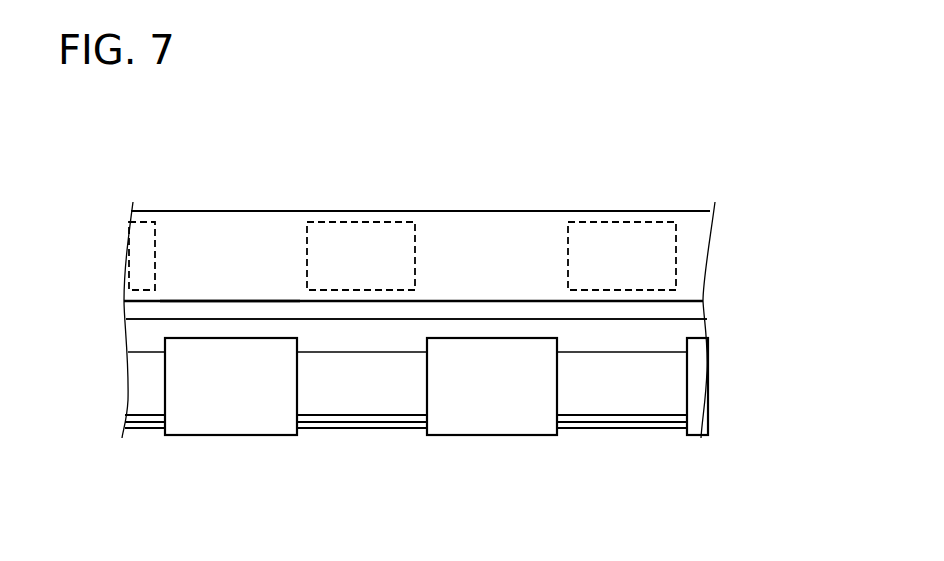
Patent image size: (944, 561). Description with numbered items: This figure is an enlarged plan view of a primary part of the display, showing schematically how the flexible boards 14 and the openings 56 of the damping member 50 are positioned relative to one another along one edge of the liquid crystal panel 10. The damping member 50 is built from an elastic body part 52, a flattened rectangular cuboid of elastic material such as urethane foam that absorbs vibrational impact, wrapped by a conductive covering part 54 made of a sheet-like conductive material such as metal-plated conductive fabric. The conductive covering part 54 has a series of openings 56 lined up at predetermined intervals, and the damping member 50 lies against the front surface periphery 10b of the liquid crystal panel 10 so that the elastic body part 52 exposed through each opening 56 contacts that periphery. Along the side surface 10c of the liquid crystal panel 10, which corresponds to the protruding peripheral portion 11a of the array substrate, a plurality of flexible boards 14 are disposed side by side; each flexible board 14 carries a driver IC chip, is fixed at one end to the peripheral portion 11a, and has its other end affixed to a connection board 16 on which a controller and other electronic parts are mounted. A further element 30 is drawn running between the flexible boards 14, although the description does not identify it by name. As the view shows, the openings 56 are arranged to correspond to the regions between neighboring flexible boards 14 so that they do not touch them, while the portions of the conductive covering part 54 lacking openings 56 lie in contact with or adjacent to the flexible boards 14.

The liquid crystal panel 10 is at (197, 183).
The damping member 50 is at (682, 198).
The conductive covering part 54 is at (255, 240).
The elastic body part 52 is at (378, 240).
The opening 56 is at (567, 233).
The front surface periphery 10b is at (135, 310).
The peripheral portion 11a is at (673, 332).
The side surface 10c is at (640, 353).
The flexible board 14 is at (240, 418).
The wiring 30 is at (348, 406).
The connection board 16 is at (637, 426).